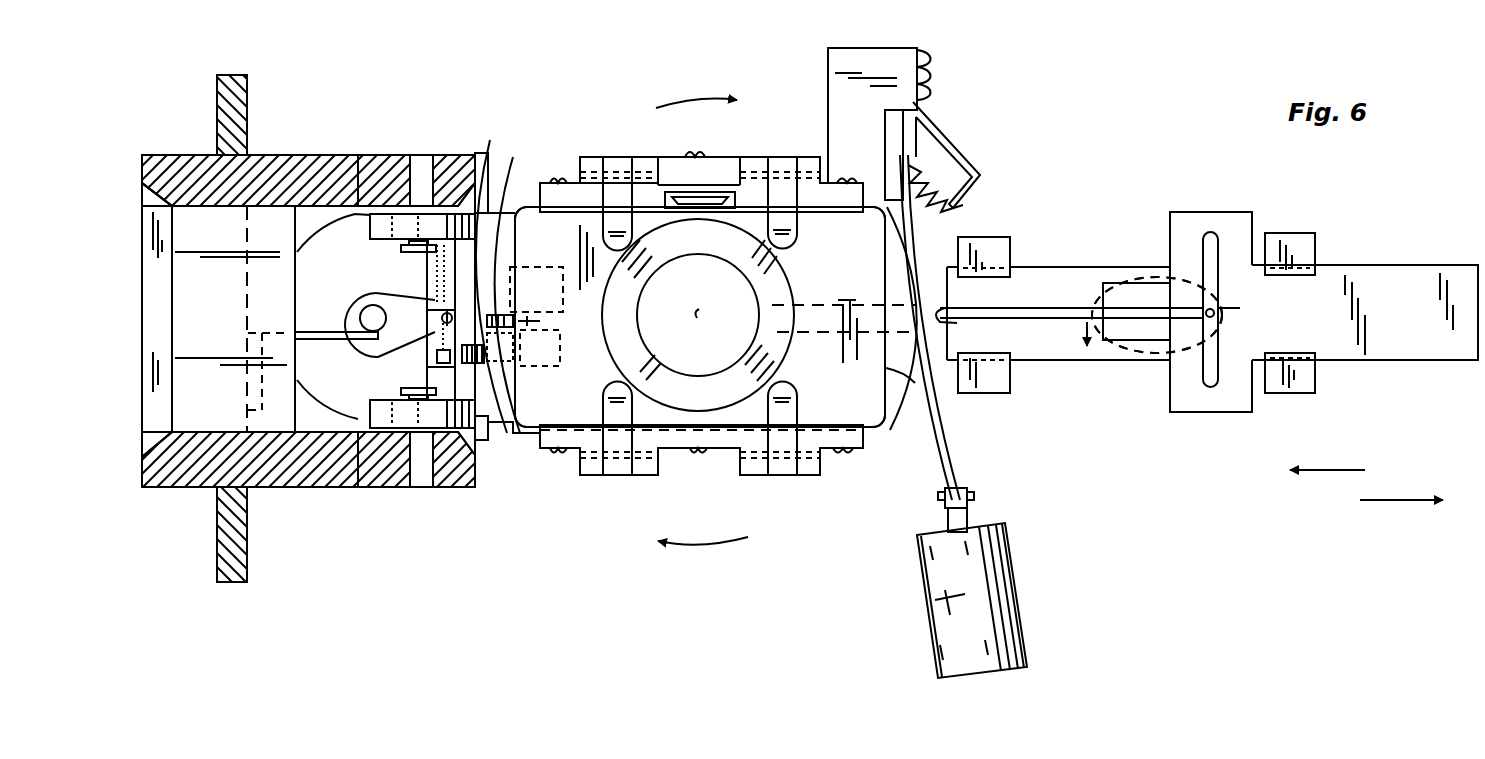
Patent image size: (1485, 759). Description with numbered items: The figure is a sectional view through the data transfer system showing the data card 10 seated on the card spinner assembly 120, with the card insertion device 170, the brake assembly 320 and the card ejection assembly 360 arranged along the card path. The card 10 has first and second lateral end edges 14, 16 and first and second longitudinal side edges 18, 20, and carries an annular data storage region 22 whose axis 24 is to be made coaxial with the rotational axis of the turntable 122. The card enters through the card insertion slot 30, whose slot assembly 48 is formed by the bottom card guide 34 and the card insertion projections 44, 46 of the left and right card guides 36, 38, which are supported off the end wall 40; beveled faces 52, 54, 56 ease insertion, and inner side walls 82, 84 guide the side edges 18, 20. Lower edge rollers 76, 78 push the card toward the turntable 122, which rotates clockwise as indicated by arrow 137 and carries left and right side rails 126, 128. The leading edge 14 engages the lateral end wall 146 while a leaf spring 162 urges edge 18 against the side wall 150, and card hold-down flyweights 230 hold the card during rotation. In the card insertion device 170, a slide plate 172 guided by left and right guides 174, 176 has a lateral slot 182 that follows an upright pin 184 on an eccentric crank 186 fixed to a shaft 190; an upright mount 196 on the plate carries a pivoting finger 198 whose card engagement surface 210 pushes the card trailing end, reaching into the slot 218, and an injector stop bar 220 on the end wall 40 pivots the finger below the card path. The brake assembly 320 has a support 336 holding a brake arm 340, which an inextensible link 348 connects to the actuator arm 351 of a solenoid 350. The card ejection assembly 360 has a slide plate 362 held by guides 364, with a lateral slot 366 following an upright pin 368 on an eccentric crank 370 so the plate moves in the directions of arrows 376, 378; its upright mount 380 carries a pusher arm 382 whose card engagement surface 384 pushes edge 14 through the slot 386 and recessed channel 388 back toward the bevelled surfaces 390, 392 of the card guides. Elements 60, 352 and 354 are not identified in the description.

The data card 10 is at (845, 365).
The first lateral end edge 14 is at (902, 397).
The second lateral end edge 16 is at (508, 210).
The first longitudinal side edge 18 is at (825, 463).
The second longitudinal side edge 20 is at (732, 187).
The annular data storage region 22 is at (712, 250).
The axis of the annular data storage region 24 is at (698, 322).
The card insertion slot 30 is at (138, 298).
The bottom card guide 34 is at (141, 372).
The left card guide 36 is at (293, 152).
The right card guide 38 is at (295, 490).
The end wall 40 is at (218, 103).
The card insertion projection 44 is at (188, 160).
The card insertion projection 46 is at (158, 487).
The slot assembly 48 is at (180, 490).
The beveled face 52 is at (158, 333).
The beveled face 54 is at (153, 200).
The beveled face 56 is at (160, 436).
The piston 60 is at (222, 288).
The lower edge roller 76 is at (358, 165).
The lower edge roller 78 is at (387, 420).
The inner side wall 82 is at (203, 213).
The inner side wall 84 is at (212, 430).
The card spinner assembly 120 is at (592, 147).
The turntable 122 is at (875, 442).
The left side rail 126 is at (668, 162).
The right side rail 128 is at (672, 447).
The arrow 137 is at (695, 100).
The lateral end wall 146 is at (880, 277).
The side wall 150 is at (822, 427).
The leaf spring 162 is at (680, 197).
The card insertion device 170 is at (353, 400).
The slide plate 172 is at (500, 430).
The left guide 174 is at (485, 153).
The right guide 176 is at (485, 487).
The lateral slot 182 is at (418, 250).
The upright pin 184 is at (467, 317).
The eccentric crank 186 is at (398, 290).
The shaft 190 is at (368, 308).
The upright mount 196 is at (480, 352).
The finger 198 is at (523, 335).
The card engagement surface 210 is at (535, 323).
The slot 218 is at (488, 307).
The injector stop bar 220 is at (313, 338).
The card hold-down flyweights 230 is at (612, 158).
The brake assembly 320 is at (985, 42).
The support 336 is at (842, 57).
The brake arm 340 is at (890, 167).
The inextensible link 348 is at (967, 484).
The solenoid 350 is at (972, 600).
The actuator arm 351 is at (980, 514).
The angled arm 352 is at (932, 167).
The teeth 354 is at (928, 117).
The card ejection assembly 360 is at (1216, 440).
The slide plate 362 is at (1380, 347).
The guides 364 is at (982, 240).
The lateral slot 366 is at (1210, 238).
The upright pin 368 is at (1223, 309).
The eccentric crank 370 is at (1168, 363).
The arrow 376 is at (1327, 470).
The arrow 378 is at (1383, 507).
The upright mount 380 is at (1127, 293).
The pusher arm 382 is at (1028, 312).
The card engagement surface 384 is at (952, 318).
The slot 386 is at (932, 255).
The recessed channel 388 is at (814, 292).
The bevelled surface 390 is at (500, 177).
The bevelled surface 392 is at (462, 483).